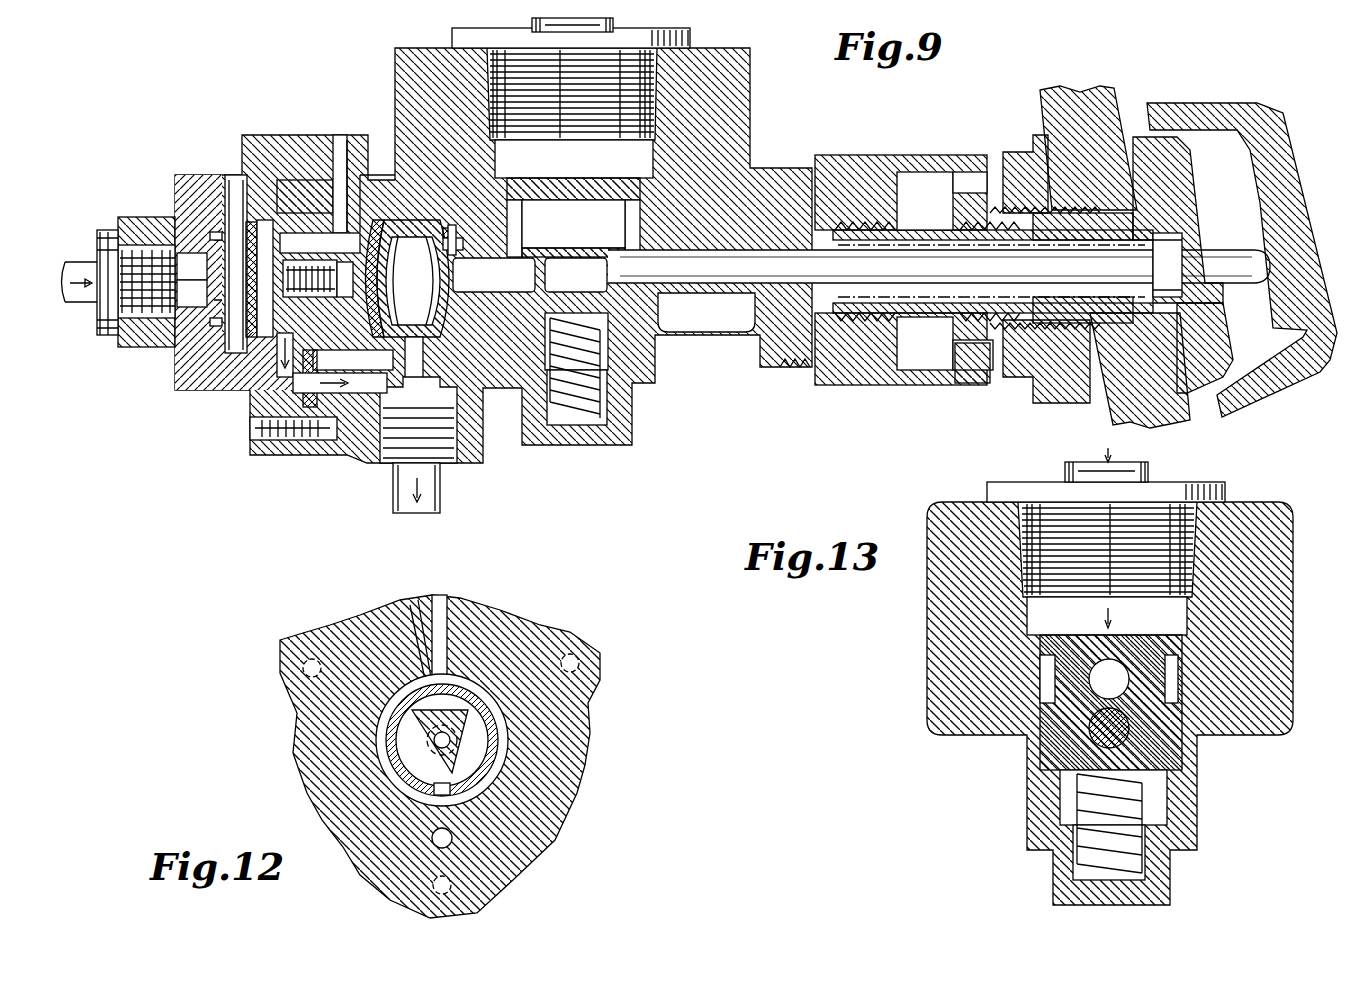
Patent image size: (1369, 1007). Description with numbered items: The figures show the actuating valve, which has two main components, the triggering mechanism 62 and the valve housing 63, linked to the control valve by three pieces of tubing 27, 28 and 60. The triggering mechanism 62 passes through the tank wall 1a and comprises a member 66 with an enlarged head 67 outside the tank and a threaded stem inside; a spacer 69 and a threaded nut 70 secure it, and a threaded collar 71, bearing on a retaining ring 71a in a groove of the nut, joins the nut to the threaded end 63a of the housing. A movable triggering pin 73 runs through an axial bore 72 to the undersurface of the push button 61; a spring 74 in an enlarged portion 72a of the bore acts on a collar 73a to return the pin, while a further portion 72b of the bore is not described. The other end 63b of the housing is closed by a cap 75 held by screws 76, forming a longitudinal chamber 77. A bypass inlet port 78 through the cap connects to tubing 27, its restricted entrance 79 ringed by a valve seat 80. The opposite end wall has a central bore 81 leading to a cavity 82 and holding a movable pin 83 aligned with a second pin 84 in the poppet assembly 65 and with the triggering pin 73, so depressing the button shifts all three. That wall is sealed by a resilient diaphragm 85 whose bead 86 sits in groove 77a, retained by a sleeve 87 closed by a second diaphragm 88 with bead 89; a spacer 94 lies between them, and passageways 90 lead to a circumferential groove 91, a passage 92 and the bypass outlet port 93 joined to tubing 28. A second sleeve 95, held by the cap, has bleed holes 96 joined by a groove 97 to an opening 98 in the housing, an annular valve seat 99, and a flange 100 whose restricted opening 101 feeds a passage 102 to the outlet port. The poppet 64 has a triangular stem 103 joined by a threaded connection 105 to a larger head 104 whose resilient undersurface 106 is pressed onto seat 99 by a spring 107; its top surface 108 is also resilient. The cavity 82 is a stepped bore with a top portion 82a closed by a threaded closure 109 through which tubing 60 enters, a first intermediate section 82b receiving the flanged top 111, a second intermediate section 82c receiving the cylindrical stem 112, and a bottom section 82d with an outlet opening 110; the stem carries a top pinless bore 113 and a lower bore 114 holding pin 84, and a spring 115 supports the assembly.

In FIG. 9, the frame wedge member 1a is at (1118, 110).
In FIG. 9, the tubing 27 is at (88, 270).
In FIG. 9, the tubing 28 is at (445, 485).
In FIG. 9, the tubing 60 is at (628, 29).
In FIG. 13, the tubing 60 is at (1150, 470).
In FIG. 9, the push button 61 is at (1305, 232).
In FIG. 9, the triggering mechanism 62 is at (1021, 135).
In FIG. 9, the valve housing 63 is at (762, 105).
In FIG. 13, the valve housing 63 is at (1290, 580).
In FIG. 12, the valve housing 63 is at (575, 800).
In FIG. 9, the threaded end of the valve housing 63a is at (805, 370).
In FIG. 9, the other end of the valve housing 63b is at (355, 463).
In FIG. 9, the poppet 64 is at (348, 290).
In FIG. 9, the poppet assembly 65 is at (612, 178).
In FIG. 13, the poppet assembly 65 is at (1045, 692).
In FIG. 9, the member 66 is at (1198, 192).
In FIG. 9, the enlarged head 67 is at (1228, 375).
In FIG. 9, the spacer 69 is at (1090, 395).
In FIG. 9, the threaded nut 70 is at (1015, 385).
In FIG. 9, the threaded collar 71 is at (925, 385).
In FIG. 9, the retaining ring 71a is at (968, 383).
In FIG. 9, the axial bore 72 is at (720, 285).
In FIG. 9, the enlarged portion of the bore 72a is at (920, 245).
In FIG. 9, the tube shoulder 72b is at (700, 325).
In FIG. 9, the triggering pin 73 is at (672, 283).
In FIG. 9, the collar 73a is at (1185, 260).
In FIG. 9, the spring 74 is at (840, 220).
In FIG. 9, the cap 75 is at (182, 392).
In FIG. 9, the screws 76 is at (246, 440).
In FIG. 9, the chamber 77 is at (232, 200).
In FIG. 12, the chamber 77 is at (410, 605).
In FIG. 9, the groove 77a is at (456, 240).
In FIG. 9, the bypass inlet port 78 is at (182, 305).
In FIG. 9, the restricted entrance 79 is at (205, 262).
In FIG. 9, the valve seat 80 is at (198, 289).
In FIG. 9, the bore 81 is at (510, 200).
In FIG. 9, the cavity 82 is at (578, 169).
In FIG. 13, the cavity 82 is at (1146, 625).
In FIG. 13, the enlarged cylindrical top portion 82a is at (1040, 632).
In FIG. 13, the first intermediate section 82b is at (1195, 728).
In FIG. 9, the second intermediate section 82c is at (625, 350).
In FIG. 13, the second intermediate section 82c is at (1150, 795).
In FIG. 13, the bottom section 82d is at (1135, 855).
In FIG. 9, the movable pin 83 is at (476, 280).
In FIG. 9, the second movable pin 84 is at (559, 280).
In FIG. 13, the second movable pin 84 is at (1120, 735).
In FIG. 9, the diaphragm 85 is at (448, 228).
In FIG. 9, the peripheral bead 86 is at (458, 238).
In FIG. 9, the sleeve 87 is at (430, 228).
In FIG. 9, the second diaphragm 88 is at (382, 228).
In FIG. 9, the peripheral bead 89 is at (405, 225).
In FIG. 9, the passageways 90 is at (413, 281).
In FIG. 9, the circumferential groove 91 is at (423, 350).
In FIG. 9, the passage 92 is at (423, 366).
In FIG. 9, the bypass outlet port 93 is at (412, 402).
In FIG. 9, the spacer 94 is at (396, 274).
In FIG. 9, the sleeve 95 is at (322, 232).
In FIG. 9, the bleed holes 96 is at (372, 175).
In FIG. 12, the bleed holes 96 is at (475, 690).
In FIG. 9, the circumferential groove 97 is at (352, 175).
In FIG. 12, the circumferential groove 97 is at (462, 690).
In FIG. 9, the opening 98 is at (342, 137).
In FIG. 12, the opening 98 is at (440, 605).
In FIG. 9, the annular valve seat 99 is at (277, 355).
In FIG. 9, the externally projecting flange 100 is at (268, 232).
In FIG. 9, the restricted opening 101 is at (250, 420).
In FIG. 9, the passage 102 is at (358, 393).
In FIG. 9, the stem 103 is at (366, 232).
In FIG. 12, the stem 103 is at (460, 752).
In FIG. 9, the head 104 is at (200, 370).
In FIG. 9, the threaded connection 105 is at (310, 289).
In FIG. 9, the undersurface 106 is at (270, 230).
In FIG. 9, the spring 107 is at (218, 232).
In FIG. 9, the top surface 108 is at (236, 200).
In FIG. 9, the threaded closure 109 is at (456, 45).
In FIG. 13, the threaded closure 109 is at (1018, 502).
In FIG. 9, the outlet opening 110 is at (588, 440).
In FIG. 9, the flanged top 111 is at (565, 190).
In FIG. 13, the flanged top 111 is at (1040, 640).
In FIG. 13, the cylindrical stem 112 is at (1052, 680).
In FIG. 9, the top pinless bore 113 is at (555, 235).
In FIG. 13, the top pinless bore 113 is at (1097, 688).
In FIG. 9, the lower bore 114 is at (530, 210).
In FIG. 13, the lower bore 114 is at (1060, 740).
In FIG. 9, the spring 115 is at (612, 412).
In FIG. 13, the spring 115 is at (1075, 870).